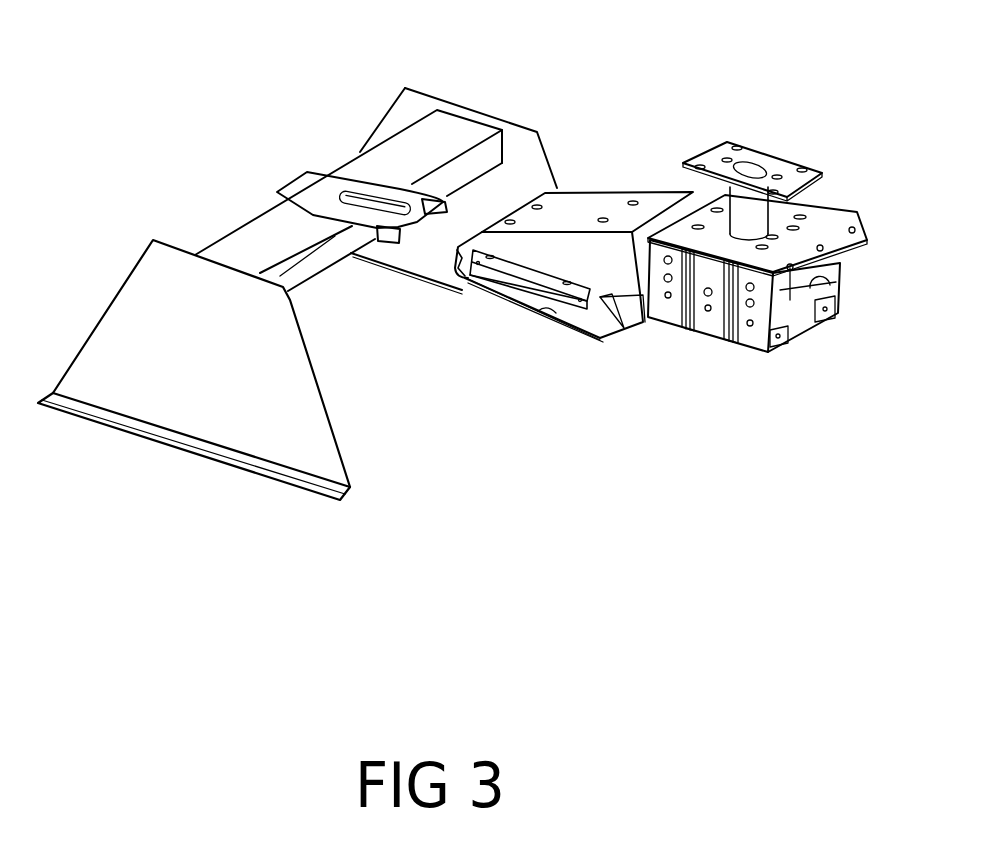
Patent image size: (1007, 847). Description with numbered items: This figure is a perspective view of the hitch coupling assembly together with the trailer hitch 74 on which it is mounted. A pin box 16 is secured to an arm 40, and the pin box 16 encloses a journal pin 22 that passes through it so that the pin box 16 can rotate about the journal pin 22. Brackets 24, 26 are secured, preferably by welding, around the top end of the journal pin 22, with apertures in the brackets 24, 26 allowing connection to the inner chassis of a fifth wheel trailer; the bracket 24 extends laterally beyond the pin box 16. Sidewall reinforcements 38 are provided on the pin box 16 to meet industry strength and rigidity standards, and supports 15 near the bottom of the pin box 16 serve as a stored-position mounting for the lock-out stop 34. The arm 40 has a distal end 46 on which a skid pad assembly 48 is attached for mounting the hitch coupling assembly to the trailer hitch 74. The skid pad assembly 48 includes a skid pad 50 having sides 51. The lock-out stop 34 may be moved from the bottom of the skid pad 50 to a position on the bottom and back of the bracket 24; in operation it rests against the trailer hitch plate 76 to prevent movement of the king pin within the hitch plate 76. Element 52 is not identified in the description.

The supports 15 is at (785, 342).
The pin box 16 is at (788, 248).
The journal pin 22 is at (760, 213).
The bracket 24 is at (827, 237).
The bracket 26 is at (758, 155).
The lock-out stop 34 is at (837, 280).
The sidewall reinforcements 38 is at (728, 310).
The arm 40 is at (594, 236).
The distal end 46 is at (557, 207).
The skid pad assembly 48 is at (583, 305).
The skid pad 50 is at (512, 300).
The sides 51 is at (493, 298).
The end cap 52 is at (460, 273).
The trailer hitch 74 is at (337, 122).
The trailer hitch plate 76 is at (308, 190).